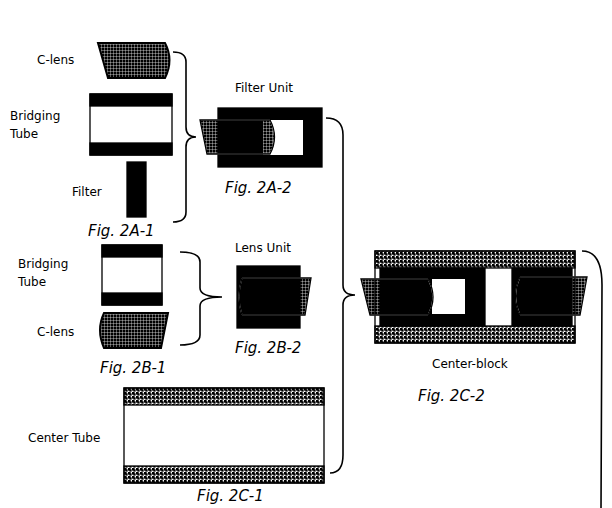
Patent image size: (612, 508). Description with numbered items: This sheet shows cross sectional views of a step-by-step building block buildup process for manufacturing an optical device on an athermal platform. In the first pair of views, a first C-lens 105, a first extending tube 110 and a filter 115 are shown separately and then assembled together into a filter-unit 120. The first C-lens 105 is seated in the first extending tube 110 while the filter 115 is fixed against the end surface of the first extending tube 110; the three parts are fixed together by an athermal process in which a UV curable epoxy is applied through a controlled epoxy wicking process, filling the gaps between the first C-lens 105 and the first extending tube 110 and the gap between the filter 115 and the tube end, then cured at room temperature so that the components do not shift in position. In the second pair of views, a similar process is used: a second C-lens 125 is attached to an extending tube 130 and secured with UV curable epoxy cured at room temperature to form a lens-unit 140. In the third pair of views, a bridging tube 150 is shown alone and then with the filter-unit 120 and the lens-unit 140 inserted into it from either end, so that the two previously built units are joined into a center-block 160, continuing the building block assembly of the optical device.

In FIG. 2A-1, the first C-lens 105 is at (133, 43).
In FIG. 2A-1, the first extending tube 110 is at (108, 126).
In FIG. 2A-1, the filter 115 is at (147, 180).
In FIG. 2A-2, the filter-unit 120 is at (317, 97).
In FIG. 2B-1, the second C-lens 125 is at (164, 316).
In FIG. 2B-1, the extending tube 130 is at (148, 282).
In FIG. 2B-2, the lens-unit 140 is at (300, 276).
In FIG. 2C-1, the bridging tube 150 is at (140, 440).
In FIG. 2C-2, the center-block 160 is at (480, 251).